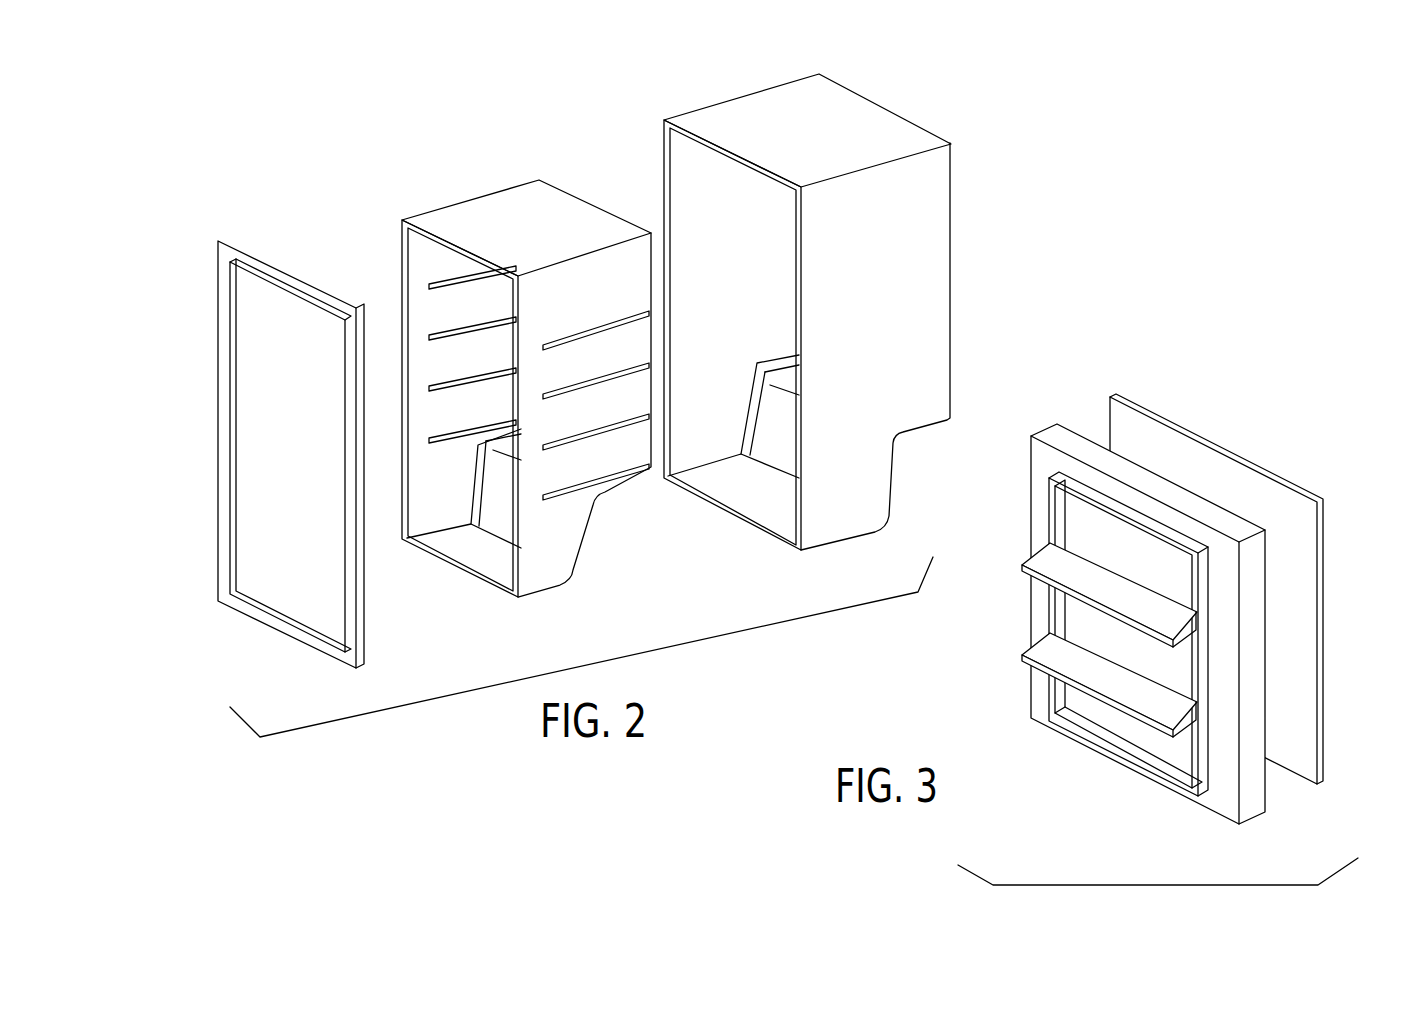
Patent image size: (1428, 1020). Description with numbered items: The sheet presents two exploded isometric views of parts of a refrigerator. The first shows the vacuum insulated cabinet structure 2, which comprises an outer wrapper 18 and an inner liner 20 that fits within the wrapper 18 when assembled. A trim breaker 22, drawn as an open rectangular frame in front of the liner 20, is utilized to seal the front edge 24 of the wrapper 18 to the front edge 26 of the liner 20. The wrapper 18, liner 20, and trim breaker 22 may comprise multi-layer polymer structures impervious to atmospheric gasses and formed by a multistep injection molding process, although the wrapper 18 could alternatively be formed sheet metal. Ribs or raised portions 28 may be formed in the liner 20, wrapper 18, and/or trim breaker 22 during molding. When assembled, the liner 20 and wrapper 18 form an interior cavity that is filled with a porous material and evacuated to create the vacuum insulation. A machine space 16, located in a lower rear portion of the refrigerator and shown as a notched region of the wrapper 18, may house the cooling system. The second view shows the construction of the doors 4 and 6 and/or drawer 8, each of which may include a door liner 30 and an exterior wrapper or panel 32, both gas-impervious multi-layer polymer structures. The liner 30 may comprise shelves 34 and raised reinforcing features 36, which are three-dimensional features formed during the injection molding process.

In FIG. 2, the vacuum insulated cabinet structure 2 is at (543, 141).
In FIG. 3, the door 4 is at (1260, 566).
In FIG. 3, the door 6 is at (1260, 566).
In FIG. 3, the drawer 8 is at (1170, 414).
In FIG. 2, the machine space 16 is at (915, 455).
In FIG. 2, the outer wrapper 18 is at (907, 113).
In FIG. 2, the inner liner 20 is at (468, 198).
In FIG. 2, the trim breaker 22 is at (250, 248).
In FIG. 2, the front edge of wrapper 24 is at (662, 152).
In FIG. 2, the front edge of liner 26 is at (400, 252).
In FIG. 2, the ribs or raised portions 28 is at (475, 433).
In FIG. 3, the door liner 30 is at (1211, 811).
In FIG. 3, the exterior wrapper or panel 32 is at (1325, 623).
In FIG. 3, the shelves 34 is at (1025, 562).
In FIG. 3, the raised reinforcing features 36 is at (1050, 510).